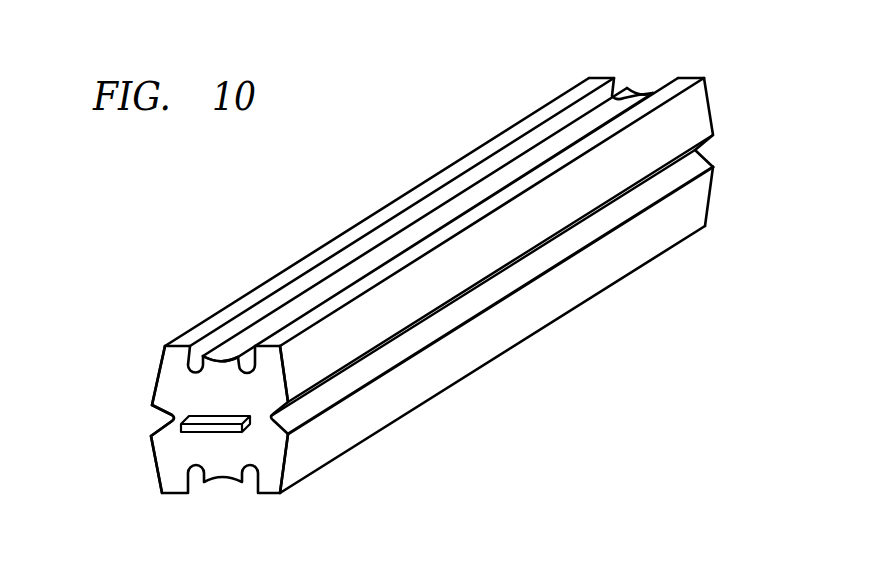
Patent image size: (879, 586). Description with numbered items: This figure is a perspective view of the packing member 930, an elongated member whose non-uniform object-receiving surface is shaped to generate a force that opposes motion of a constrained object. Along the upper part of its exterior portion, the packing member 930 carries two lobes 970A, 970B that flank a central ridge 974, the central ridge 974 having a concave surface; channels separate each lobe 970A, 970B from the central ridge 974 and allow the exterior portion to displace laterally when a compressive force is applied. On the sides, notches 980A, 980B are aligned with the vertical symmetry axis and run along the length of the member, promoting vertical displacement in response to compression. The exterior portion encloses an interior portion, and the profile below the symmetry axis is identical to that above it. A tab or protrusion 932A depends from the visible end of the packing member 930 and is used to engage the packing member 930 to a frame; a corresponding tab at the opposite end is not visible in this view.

The packing member 930 is at (394, 169).
The central ridge 974 is at (639, 95).
The lobe 970A is at (173, 370).
The lobe 970B is at (697, 122).
The notch 980A is at (162, 423).
The notch 980B is at (350, 382).
The tab/protrusion 932A is at (215, 430).